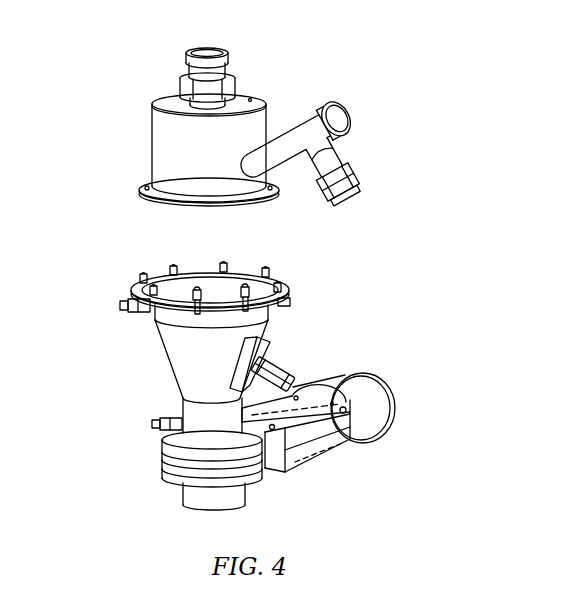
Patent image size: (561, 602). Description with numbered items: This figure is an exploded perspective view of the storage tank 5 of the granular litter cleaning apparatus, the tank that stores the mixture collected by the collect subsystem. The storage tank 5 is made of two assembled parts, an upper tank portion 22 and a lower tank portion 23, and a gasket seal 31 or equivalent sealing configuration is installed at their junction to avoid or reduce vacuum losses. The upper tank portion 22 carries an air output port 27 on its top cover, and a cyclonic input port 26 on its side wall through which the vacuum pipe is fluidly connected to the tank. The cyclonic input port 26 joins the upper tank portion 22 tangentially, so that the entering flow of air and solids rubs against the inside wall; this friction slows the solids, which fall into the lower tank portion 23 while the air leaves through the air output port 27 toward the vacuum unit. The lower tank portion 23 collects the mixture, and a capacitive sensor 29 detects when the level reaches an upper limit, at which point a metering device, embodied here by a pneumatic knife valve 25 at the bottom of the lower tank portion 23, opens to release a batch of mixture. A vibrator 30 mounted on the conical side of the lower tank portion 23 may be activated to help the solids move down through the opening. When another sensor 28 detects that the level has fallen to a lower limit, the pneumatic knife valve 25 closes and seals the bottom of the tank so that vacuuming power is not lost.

The storage tank 5 is at (380, 280).
The upper tank portion 22 is at (178, 140).
The lower tank portion 23 is at (212, 362).
The pneumatic knife valve 25 is at (373, 420).
The cyclonic input port 26 is at (273, 162).
The air output port 27 is at (212, 48).
The sensor 28 is at (150, 422).
The capacitive sensor 29 is at (125, 300).
The vibrator 30 is at (292, 376).
The gasket seal 31 is at (197, 270).